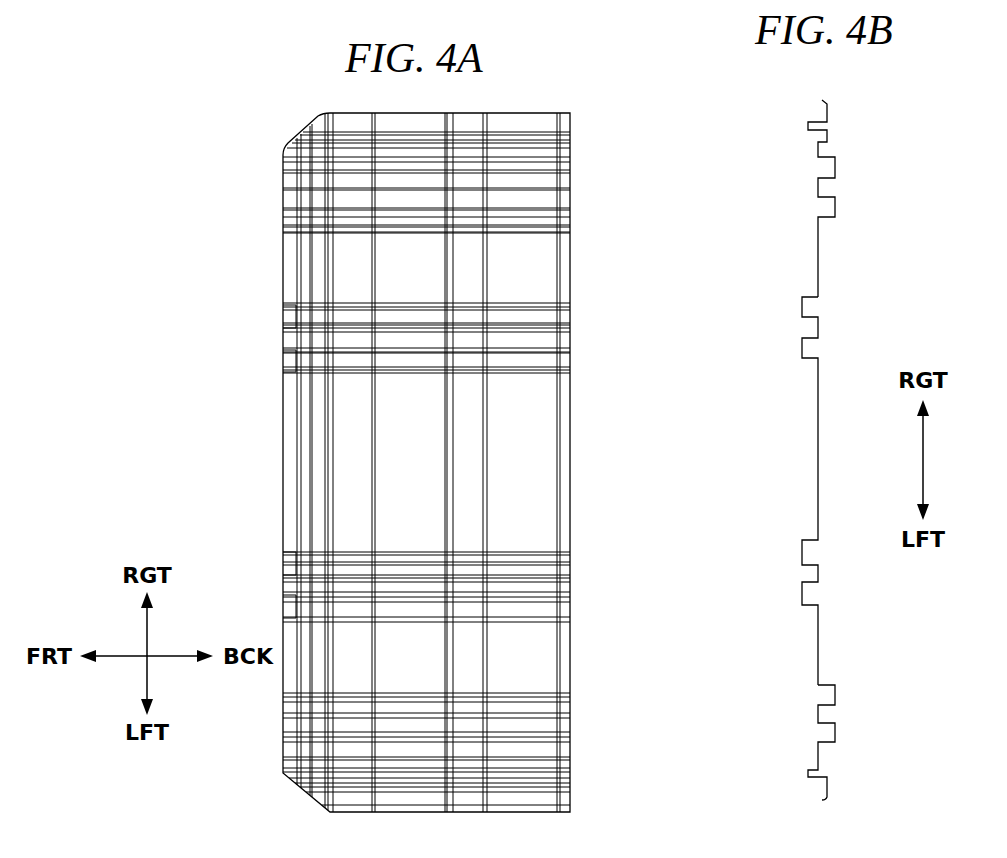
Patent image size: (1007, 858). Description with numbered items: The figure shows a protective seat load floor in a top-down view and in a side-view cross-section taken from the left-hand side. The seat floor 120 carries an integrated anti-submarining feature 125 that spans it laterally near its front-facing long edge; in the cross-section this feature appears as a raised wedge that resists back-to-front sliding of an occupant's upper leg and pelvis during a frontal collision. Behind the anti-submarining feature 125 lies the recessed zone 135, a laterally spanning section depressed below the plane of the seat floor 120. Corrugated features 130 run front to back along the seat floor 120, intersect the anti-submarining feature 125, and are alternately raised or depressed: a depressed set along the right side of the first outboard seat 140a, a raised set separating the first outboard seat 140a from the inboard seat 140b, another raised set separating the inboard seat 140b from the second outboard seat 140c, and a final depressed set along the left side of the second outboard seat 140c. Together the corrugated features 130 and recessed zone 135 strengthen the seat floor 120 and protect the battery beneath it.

In FIG. 4A, the seat floor 120 is at (304, 133).
In FIG. 4B, the seat floor 120 is at (822, 100).
In FIG. 4A, the anti-submarining feature 125 is at (333, 247).
In FIG. 4A, the corrugated features 130 is at (288, 318).
In FIG. 4B, the corrugated features 130 is at (818, 302).
In FIG. 4A, the recessed zone 135 is at (400, 488).
In FIG. 4A, the first outboard seat 140a is at (582, 143).
In FIG. 4B, the first outboard seat 140a is at (775, 290).
In FIG. 4A, the inboard seat 140b is at (582, 380).
In FIG. 4B, the inboard seat 140b is at (775, 530).
In FIG. 4A, the second outboard seat 140c is at (582, 620).
In FIG. 4B, the second outboard seat 140c is at (775, 770).